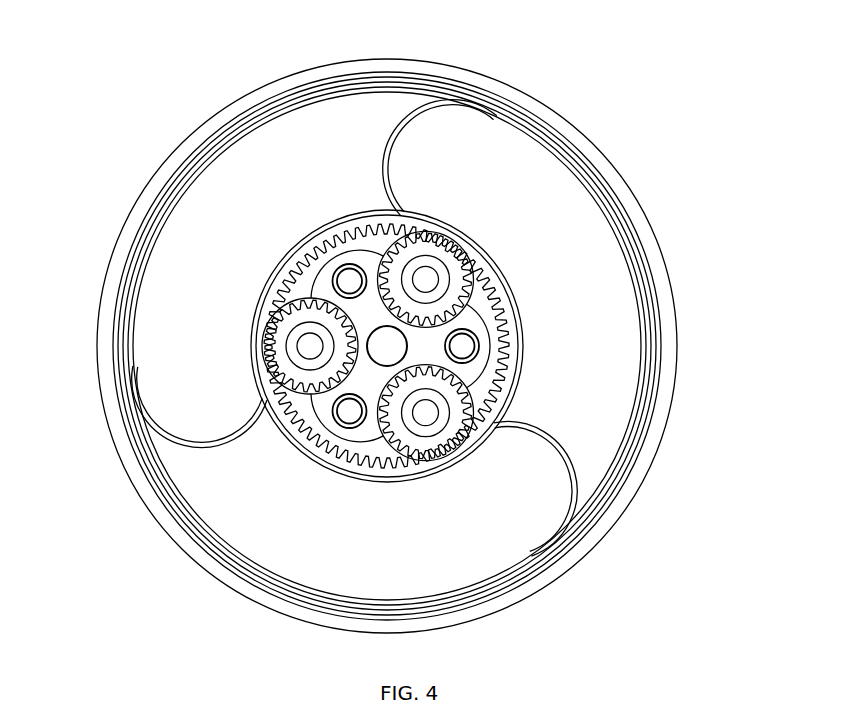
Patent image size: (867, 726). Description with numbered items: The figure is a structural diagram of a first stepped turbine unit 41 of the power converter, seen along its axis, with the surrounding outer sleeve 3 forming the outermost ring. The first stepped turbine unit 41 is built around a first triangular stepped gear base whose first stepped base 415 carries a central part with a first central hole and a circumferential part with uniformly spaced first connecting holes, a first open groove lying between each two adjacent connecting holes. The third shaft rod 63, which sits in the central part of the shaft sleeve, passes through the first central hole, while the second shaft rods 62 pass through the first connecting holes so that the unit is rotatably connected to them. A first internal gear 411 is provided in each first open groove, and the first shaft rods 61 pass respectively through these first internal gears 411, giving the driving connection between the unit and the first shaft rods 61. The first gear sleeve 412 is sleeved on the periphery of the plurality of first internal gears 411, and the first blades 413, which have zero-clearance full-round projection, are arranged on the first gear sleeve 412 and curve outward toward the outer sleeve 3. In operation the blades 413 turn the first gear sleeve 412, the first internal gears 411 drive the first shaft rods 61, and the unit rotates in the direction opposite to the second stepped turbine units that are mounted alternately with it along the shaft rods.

The outer sleeve 3 is at (475, 80).
The first stepped turbine unit 41 is at (138, 163).
The first internal gear 411 is at (450, 290).
The first gear sleeve 412 is at (377, 225).
The first blade 413 is at (267, 158).
The first stepped base 415 is at (362, 382).
The first shaft rod 61 is at (425, 280).
The second shaft rod 62 is at (470, 345).
The third shaft rod 63 is at (470, 399).